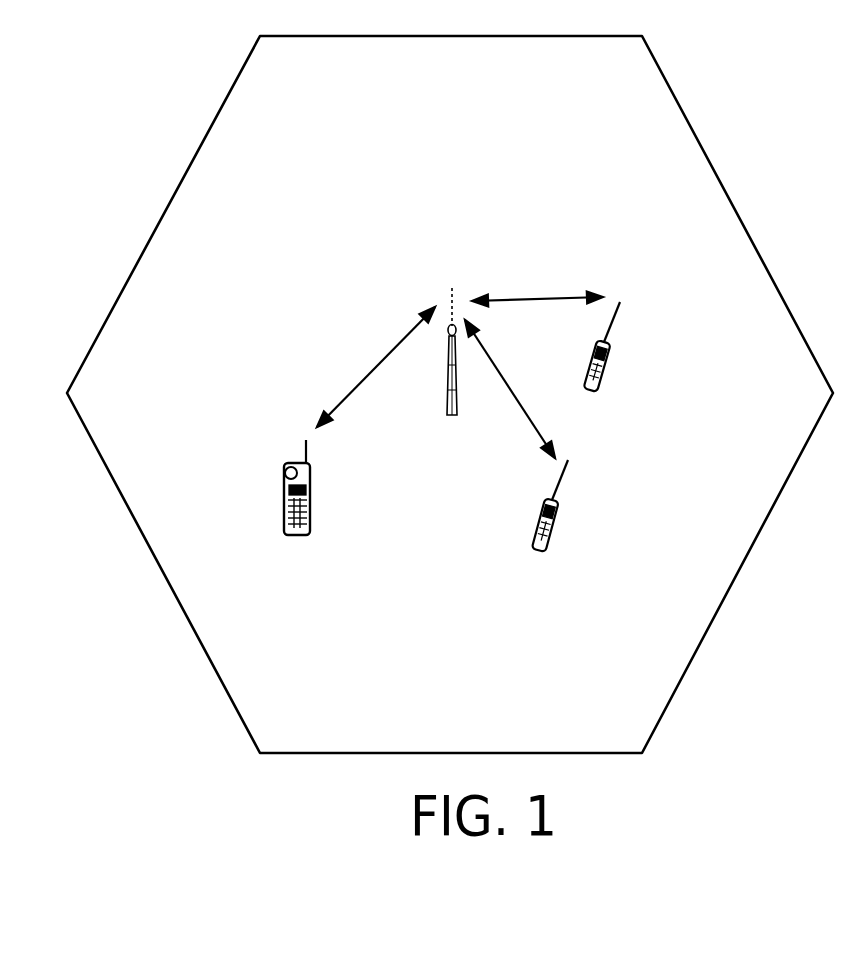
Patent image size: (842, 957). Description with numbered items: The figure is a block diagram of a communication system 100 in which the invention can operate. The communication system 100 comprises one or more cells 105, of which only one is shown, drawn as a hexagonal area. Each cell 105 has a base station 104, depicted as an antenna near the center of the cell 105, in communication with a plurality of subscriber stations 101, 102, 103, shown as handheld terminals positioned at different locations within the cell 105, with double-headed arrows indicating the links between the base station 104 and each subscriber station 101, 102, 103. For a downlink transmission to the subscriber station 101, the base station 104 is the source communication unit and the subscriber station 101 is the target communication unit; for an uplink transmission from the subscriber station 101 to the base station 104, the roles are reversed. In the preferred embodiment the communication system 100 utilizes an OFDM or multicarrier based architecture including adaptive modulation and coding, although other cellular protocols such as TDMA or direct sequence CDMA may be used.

The communication system 100 is at (450, 465).
The subscriber station 101 is at (620, 362).
The subscriber station 102 is at (556, 553).
The subscriber station 103 is at (305, 439).
The base station 104 is at (457, 300).
The cell 105 is at (714, 618).